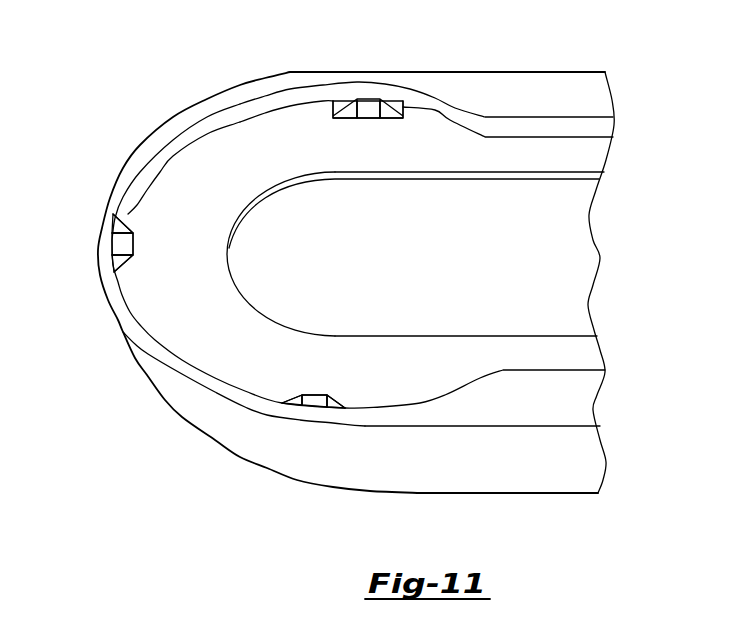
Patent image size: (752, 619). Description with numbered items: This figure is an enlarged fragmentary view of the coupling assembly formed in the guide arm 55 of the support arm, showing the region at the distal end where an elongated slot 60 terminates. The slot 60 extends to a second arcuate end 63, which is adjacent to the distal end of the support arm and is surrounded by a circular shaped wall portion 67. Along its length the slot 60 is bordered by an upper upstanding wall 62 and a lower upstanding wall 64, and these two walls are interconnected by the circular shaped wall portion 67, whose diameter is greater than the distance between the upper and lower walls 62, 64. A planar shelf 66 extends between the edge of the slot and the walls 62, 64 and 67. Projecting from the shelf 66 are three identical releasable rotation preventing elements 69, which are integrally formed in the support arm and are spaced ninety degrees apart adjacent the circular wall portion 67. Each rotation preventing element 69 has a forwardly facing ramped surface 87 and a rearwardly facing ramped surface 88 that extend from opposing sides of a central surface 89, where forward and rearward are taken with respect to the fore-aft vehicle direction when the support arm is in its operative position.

The guide arm 55 is at (507, 72).
The elongated slot 60 is at (526, 182).
The upper upstanding wall 62 is at (533, 117).
The second arcuate end 63 is at (229, 247).
The lower upstanding wall 64 is at (505, 372).
The planar shelf 66 is at (580, 355).
The circular shaped wall portion 67 is at (124, 190).
The releasable rotation preventing element 69 is at (371, 122).
The forwardly facing ramped surface 87 is at (394, 108).
The rearwardly facing ramped surface 88 is at (348, 108).
The central surface 89 is at (373, 103).